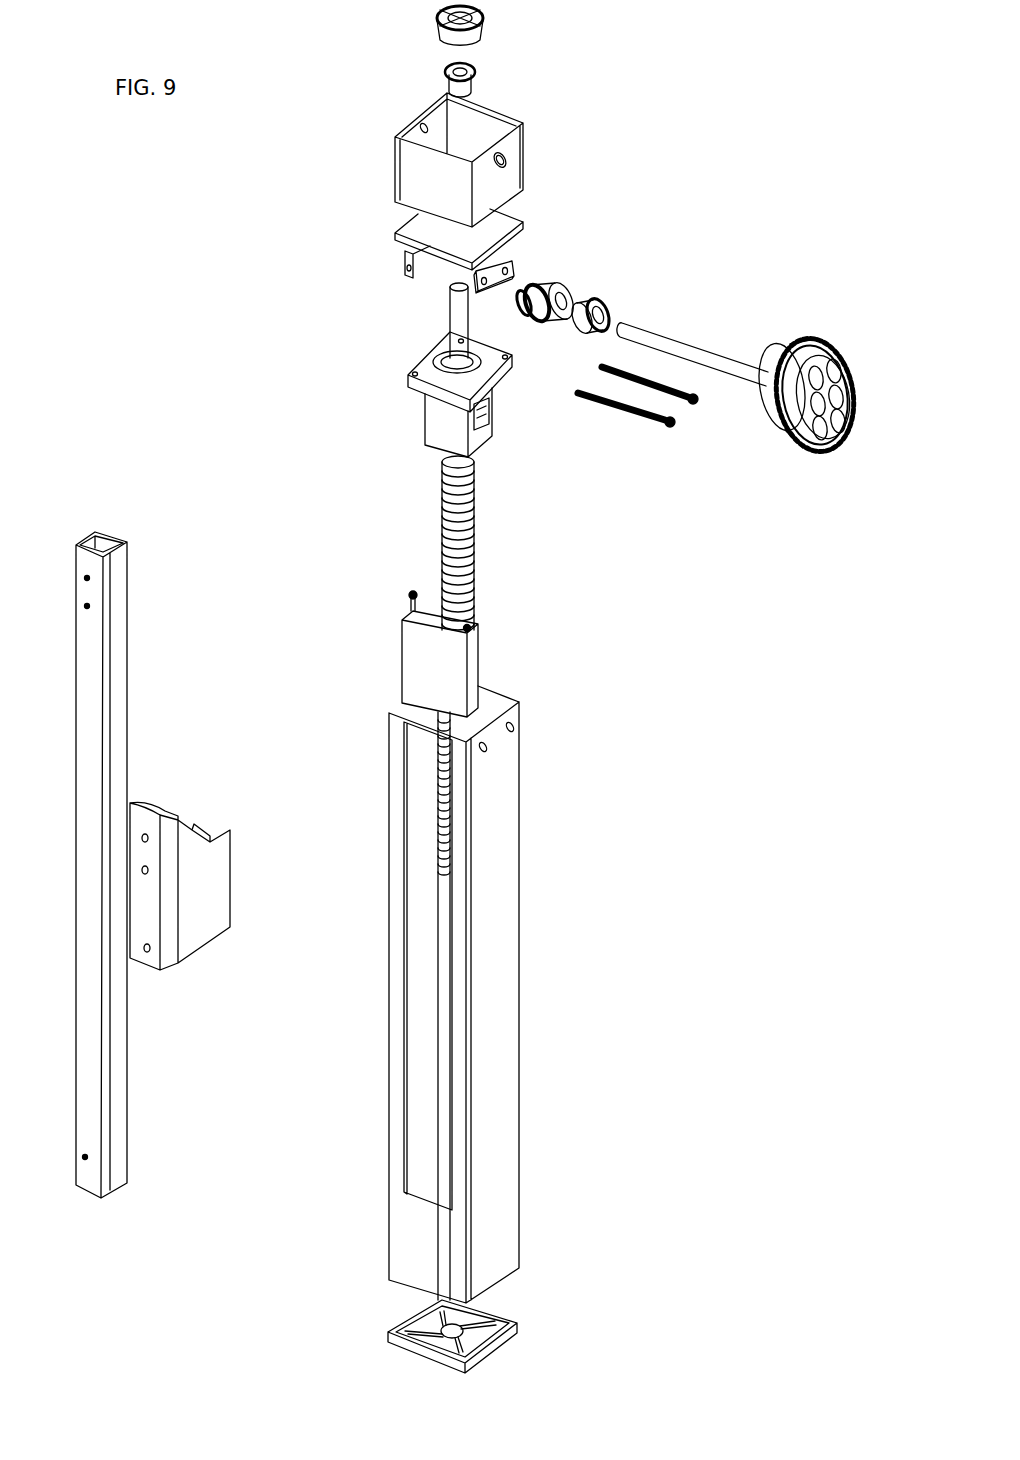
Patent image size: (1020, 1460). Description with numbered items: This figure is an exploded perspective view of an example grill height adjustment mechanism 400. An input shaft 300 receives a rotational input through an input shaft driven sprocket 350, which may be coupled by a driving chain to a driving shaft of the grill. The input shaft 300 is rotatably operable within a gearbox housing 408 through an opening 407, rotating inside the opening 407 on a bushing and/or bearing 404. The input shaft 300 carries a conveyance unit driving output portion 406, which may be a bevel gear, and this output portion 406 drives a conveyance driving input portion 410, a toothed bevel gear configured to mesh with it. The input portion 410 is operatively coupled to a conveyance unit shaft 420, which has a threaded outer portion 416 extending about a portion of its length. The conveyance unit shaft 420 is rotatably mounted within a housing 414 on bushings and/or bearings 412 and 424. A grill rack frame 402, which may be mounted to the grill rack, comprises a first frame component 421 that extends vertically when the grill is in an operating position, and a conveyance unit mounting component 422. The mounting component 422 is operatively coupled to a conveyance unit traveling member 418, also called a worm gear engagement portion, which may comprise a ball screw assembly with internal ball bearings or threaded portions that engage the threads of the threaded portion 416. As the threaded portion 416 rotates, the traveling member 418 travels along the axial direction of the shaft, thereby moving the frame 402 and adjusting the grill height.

The input shaft 300 is at (678, 340).
The input shaft driven sprocket 350 is at (827, 343).
The grill height adjustment mechanism 400 is at (322, 230).
The grill rack frame 402 is at (101, 452).
The bushing and/or bearing 404 is at (600, 310).
The conveyance unit driving output portion 406 is at (553, 286).
The opening 407 is at (507, 165).
The gearbox housing 408 is at (396, 166).
The conveyance driving input portion 410 is at (440, 22).
The bushing and/or bearing 412 is at (478, 67).
The housing 414 is at (390, 822).
The threaded outer portion 416 is at (443, 530).
The conveyance unit traveling member 418 is at (413, 368).
The conveyance unit shaft 420 is at (448, 318).
The first frame component 421 is at (130, 638).
The conveyance unit mounting component 422 is at (192, 832).
The bushing and/or bearing 424 is at (513, 1322).